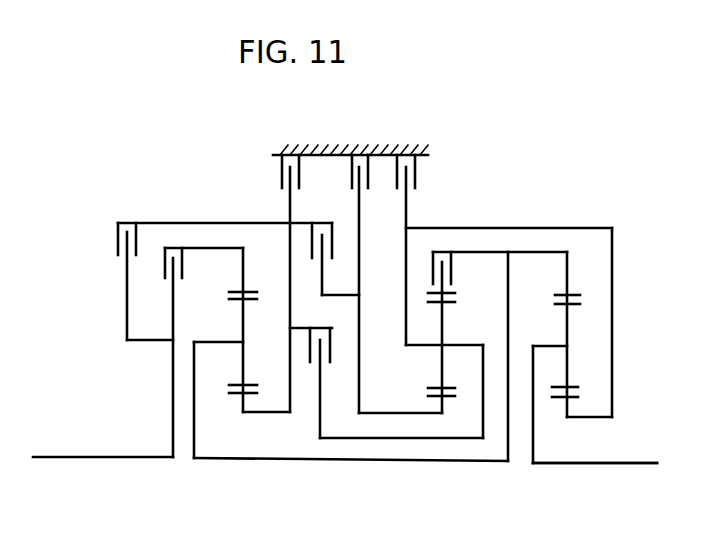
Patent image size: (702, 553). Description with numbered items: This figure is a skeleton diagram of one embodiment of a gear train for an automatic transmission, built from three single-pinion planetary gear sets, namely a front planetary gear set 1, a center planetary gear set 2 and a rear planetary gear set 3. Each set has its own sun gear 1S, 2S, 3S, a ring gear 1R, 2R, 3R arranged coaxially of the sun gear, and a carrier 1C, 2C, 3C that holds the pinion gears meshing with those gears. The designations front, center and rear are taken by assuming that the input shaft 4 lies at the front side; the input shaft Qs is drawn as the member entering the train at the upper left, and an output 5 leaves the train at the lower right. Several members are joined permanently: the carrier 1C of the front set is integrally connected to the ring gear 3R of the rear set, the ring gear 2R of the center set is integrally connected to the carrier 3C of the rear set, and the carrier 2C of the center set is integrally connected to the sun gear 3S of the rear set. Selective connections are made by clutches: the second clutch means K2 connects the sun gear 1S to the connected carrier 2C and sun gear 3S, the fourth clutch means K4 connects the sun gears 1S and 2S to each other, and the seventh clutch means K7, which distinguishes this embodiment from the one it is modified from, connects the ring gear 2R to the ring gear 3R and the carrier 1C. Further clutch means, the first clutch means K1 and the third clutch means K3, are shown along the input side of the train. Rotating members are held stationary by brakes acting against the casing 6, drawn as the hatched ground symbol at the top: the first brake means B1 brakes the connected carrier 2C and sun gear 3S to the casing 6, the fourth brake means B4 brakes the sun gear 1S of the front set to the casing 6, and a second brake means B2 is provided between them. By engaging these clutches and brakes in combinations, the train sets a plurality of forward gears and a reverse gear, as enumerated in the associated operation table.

The casing 6 is at (342, 155).
The fourth brake means B4 is at (274, 283).
The second brake means B2 is at (345, 284).
The first brake means B1 is at (420, 250).
The input shaft Qs is at (229, 223).
The third clutch means K3 is at (145, 268).
The first clutch means K1 is at (204, 341).
The fourth clutch means K4 is at (335, 248).
The second clutch means K2 is at (311, 371).
The seventh clutch means K7 is at (500, 261).
The input shaft 4 is at (123, 456).
The output 5 is at (620, 448).
The front planetary gear set 1 is at (350, 372).
The ring gear 1R is at (232, 290).
The carrier 1C is at (222, 342).
The sun gear 1S is at (242, 427).
The center planetary gear set 2 is at (403, 387).
The ring gear 2R is at (474, 283).
The carrier 2C is at (464, 323).
The sun gear 2S is at (435, 420).
The rear planetary gear set 3 is at (589, 377).
The ring gear 3R is at (569, 294).
The carrier 3C is at (542, 337).
The sun gear 3S is at (567, 425).